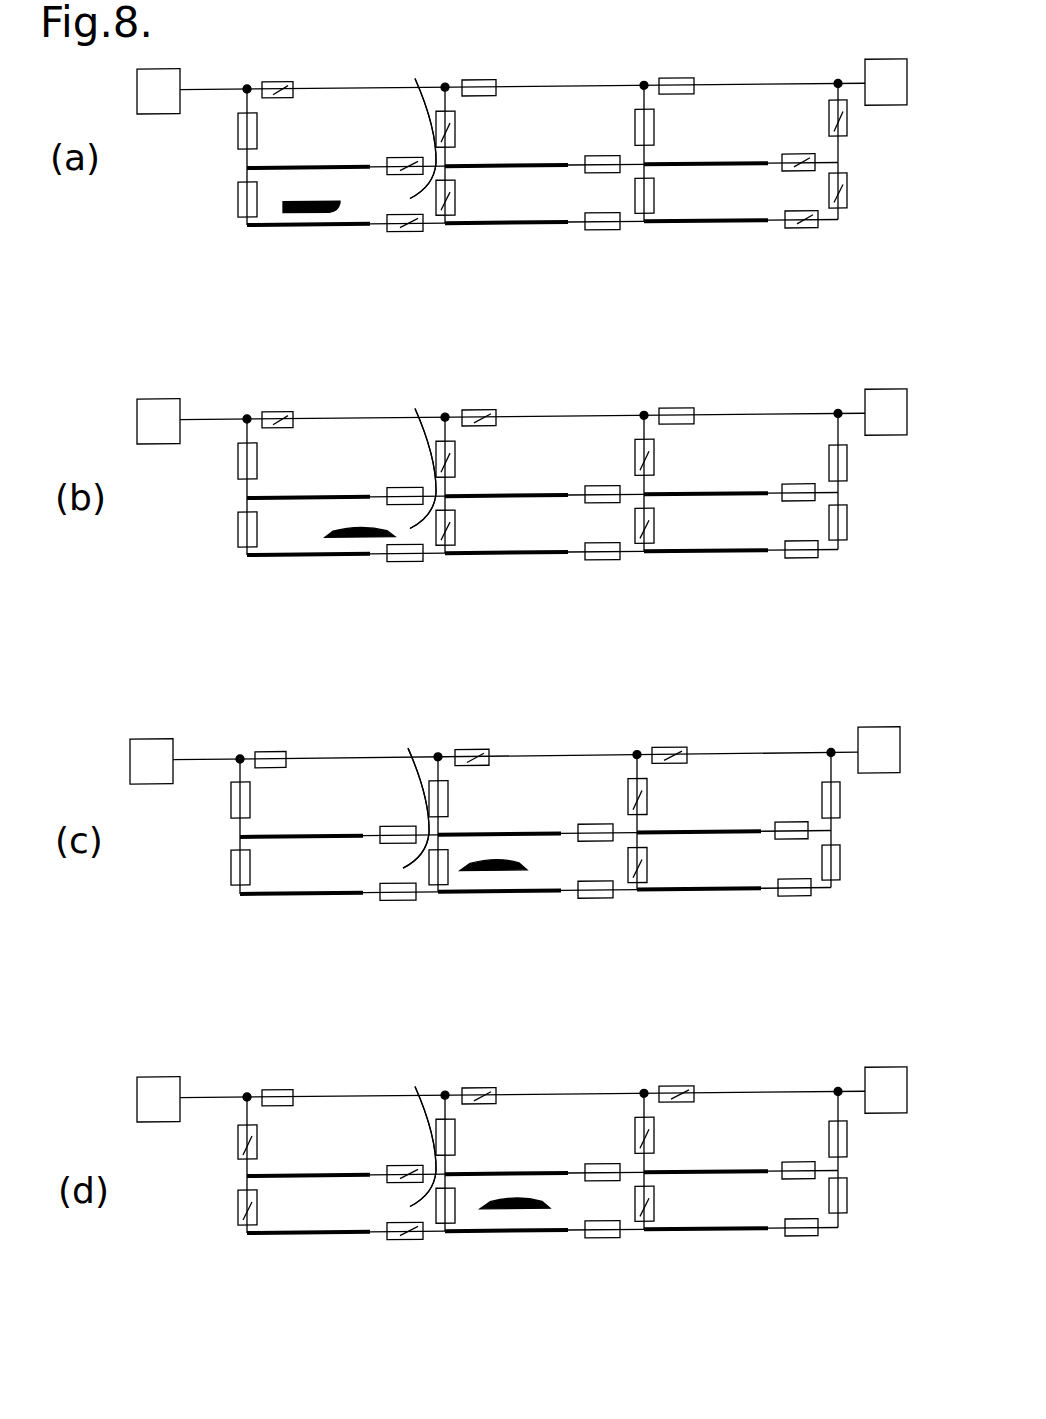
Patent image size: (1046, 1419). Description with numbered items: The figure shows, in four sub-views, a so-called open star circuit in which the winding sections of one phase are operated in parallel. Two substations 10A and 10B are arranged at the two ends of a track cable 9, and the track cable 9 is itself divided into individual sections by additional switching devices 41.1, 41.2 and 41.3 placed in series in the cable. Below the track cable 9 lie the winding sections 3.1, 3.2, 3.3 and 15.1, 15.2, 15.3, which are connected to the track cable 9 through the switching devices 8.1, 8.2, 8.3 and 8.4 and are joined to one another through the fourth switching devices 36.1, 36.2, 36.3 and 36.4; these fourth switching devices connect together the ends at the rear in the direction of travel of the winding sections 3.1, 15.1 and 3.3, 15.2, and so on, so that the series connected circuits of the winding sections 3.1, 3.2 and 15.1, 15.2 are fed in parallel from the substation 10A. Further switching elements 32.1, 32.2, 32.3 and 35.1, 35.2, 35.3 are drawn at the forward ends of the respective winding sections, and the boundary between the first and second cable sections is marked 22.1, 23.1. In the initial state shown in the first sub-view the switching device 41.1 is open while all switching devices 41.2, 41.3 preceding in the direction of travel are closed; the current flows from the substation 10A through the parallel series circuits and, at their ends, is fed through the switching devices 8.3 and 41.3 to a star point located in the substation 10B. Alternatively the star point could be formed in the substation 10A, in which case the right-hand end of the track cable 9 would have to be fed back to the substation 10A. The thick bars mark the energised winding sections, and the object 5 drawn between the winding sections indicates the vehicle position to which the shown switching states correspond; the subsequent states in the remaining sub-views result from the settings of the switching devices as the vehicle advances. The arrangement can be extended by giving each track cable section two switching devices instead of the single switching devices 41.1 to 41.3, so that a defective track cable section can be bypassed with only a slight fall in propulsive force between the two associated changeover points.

The track cable 9 is at (195, 88).
The substation 10A is at (160, 113).
The substation 10B is at (880, 110).
The switching device 41.1 is at (290, 82).
The switching device 41.2 is at (489, 82).
The switching device 41.3 is at (688, 82).
The section boundary 22.1 is at (412, 619).
The section separation point 23.1 is at (412, 630).
The switching device 8.1 is at (257, 137).
The switching device 8.2 is at (455, 135).
The switching device 8.3 is at (654, 135).
The switching device 8.4 is at (829, 124).
The fourth switching device 36.1 is at (238, 203).
The fourth switching device 36.2 is at (455, 205).
The fourth switching device 36.3 is at (654, 205).
The fourth switching device 36.4 is at (847, 201).
The winding section 3.1 is at (340, 166).
The winding section 3.2 is at (538, 166).
The winding section 3.3 is at (737, 166).
The winding section 15.1 is at (275, 227).
The winding section 15.2 is at (475, 227).
The winding section 15.3 is at (672, 227).
The contact wire section isolator 32.1 is at (400, 159).
The contact wire section isolator 32.2 is at (598, 159).
The contact wire section isolator 32.3 is at (795, 159).
The return conductor section isolator 35.1 is at (400, 232).
The return conductor section isolator 35.2 is at (600, 232).
The return conductor section isolator 35.3 is at (800, 232).
The vehicle 5 is at (307, 202).